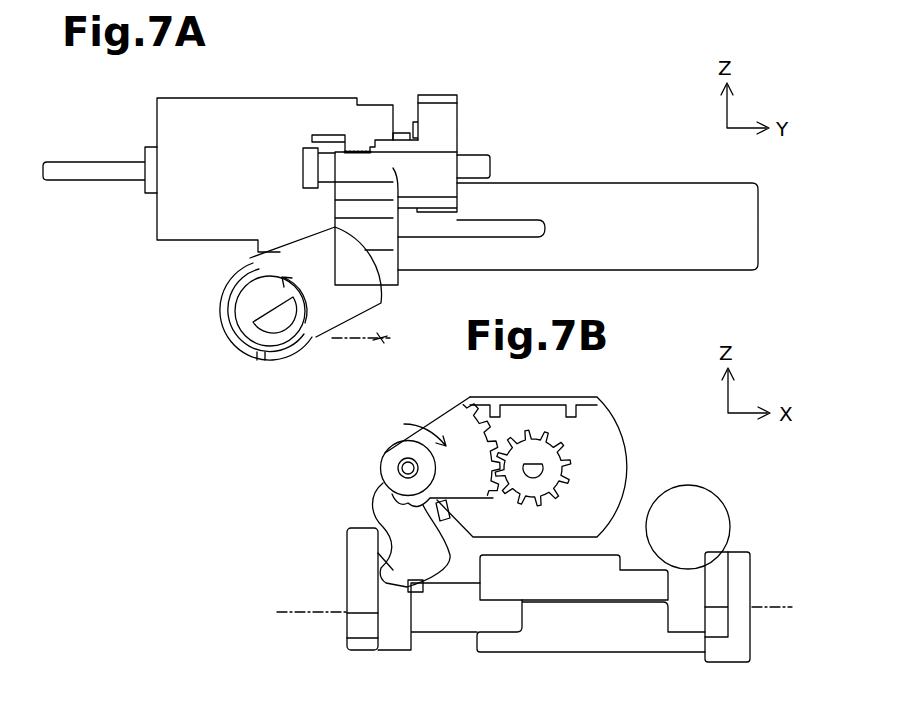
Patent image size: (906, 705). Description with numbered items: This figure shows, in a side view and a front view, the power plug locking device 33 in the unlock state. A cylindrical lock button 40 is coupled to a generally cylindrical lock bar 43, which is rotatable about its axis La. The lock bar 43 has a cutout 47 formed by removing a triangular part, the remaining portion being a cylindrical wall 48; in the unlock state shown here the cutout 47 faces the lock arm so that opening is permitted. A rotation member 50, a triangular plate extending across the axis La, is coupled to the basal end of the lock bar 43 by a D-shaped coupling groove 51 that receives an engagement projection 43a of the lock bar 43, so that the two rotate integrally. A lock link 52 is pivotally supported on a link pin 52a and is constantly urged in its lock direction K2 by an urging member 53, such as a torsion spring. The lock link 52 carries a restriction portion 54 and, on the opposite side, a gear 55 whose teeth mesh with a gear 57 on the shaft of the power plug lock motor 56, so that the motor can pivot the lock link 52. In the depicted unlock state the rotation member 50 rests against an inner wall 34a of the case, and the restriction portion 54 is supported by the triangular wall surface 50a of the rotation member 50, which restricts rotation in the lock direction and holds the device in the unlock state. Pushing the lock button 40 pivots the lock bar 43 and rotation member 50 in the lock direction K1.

In FIG. 7A, the power plug locking device 33 is at (138, 89).
In FIG. 7B, the power plug locking device 33 is at (678, 407).
In FIG. 7A, the power plug lock motor 56 is at (228, 97).
In FIG. 7B, the power plug lock motor 56 is at (590, 396).
In FIG. 7A, the gear 55 is at (437, 95).
In FIG. 7B, the gear 55 is at (478, 412).
In FIG. 7A, the lock link 52 is at (459, 108).
In FIG. 7B, the lock link 52 is at (380, 480).
In FIG. 7A, the link pin 52a is at (302, 157).
In FIG. 7B, the link pin 52a is at (416, 468).
In FIG. 7A, the urging member 53 is at (357, 150).
In FIG. 7B, the urging member 53 is at (447, 512).
In FIG. 7A, the restriction portion 54 is at (399, 262).
In FIG. 7B, the restriction portion 54 is at (438, 578).
In FIG. 7A, the lock button 40 is at (675, 186).
In FIG. 7B, the lock button 40 is at (688, 486).
In FIG. 7A, the rotation member 50 is at (300, 243).
In FIG. 7B, the rotation member 50 is at (347, 546).
In FIG. 7B, the triangular wall surface 50a is at (376, 534).
In FIG. 7A, the lock bar 43 is at (220, 301).
In FIG. 7B, the lock bar 43 is at (748, 569).
In FIG. 7A, the cylindrical wall 48 is at (221, 333).
In FIG. 7A, the cutout 47 is at (261, 359).
In FIG. 7B, the cutout 47 is at (598, 651).
In FIG. 7A, the engagement projection 43a is at (274, 330).
In FIG. 7A, the coupling groove 51 is at (296, 309).
In FIG. 7A, the inner wall 34a is at (367, 350).
In FIG. 7B, the gear 57 is at (574, 470).
In FIG. 7A, the lock direction K1 is at (294, 290).
In FIG. 7B, the lock direction K2 is at (412, 422).
In FIG. 7B, the axis La is at (284, 611).